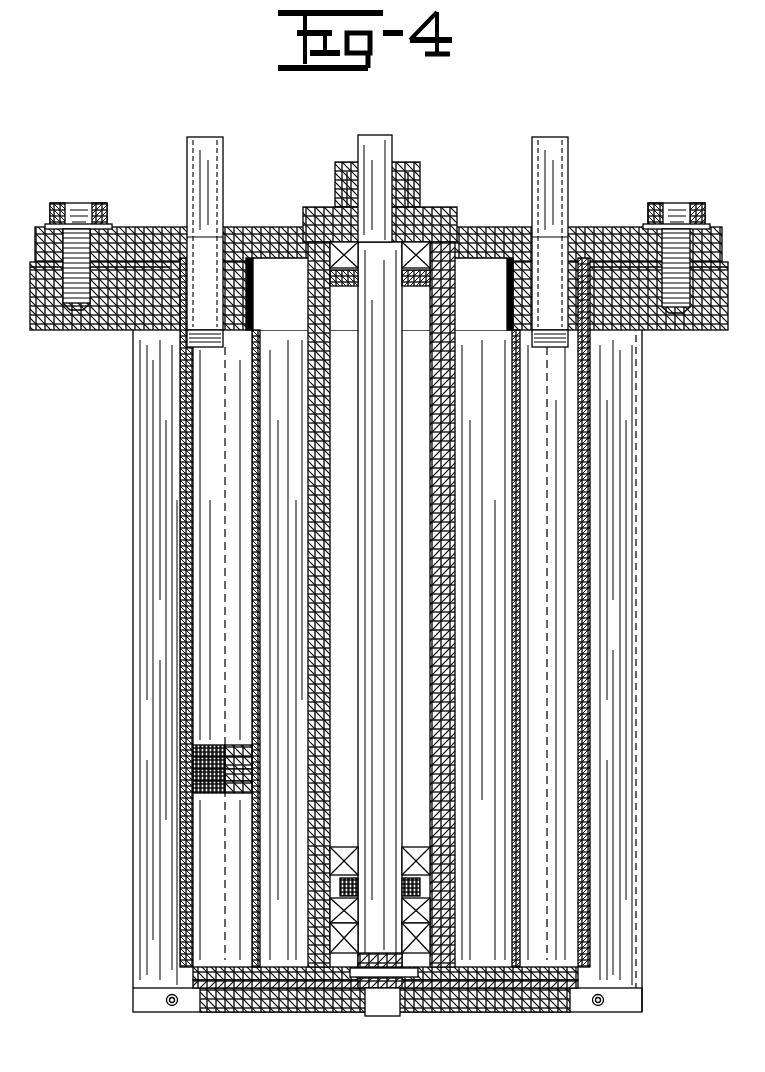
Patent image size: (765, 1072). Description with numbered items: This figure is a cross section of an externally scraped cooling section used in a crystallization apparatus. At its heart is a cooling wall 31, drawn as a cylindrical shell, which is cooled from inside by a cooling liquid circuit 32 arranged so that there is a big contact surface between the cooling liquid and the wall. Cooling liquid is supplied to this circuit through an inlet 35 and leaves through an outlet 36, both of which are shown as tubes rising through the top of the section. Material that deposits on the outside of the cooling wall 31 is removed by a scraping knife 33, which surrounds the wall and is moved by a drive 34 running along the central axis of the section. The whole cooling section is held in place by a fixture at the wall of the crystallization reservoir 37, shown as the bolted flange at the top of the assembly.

The cooling wall 31 is at (186, 684).
The cooling liquid circuit 32 is at (182, 762).
The scraping knife 33 is at (145, 818).
The drive 34 is at (373, 140).
The inlet 35 is at (206, 138).
The outlet 36 is at (546, 138).
The fixture 37 is at (113, 308).